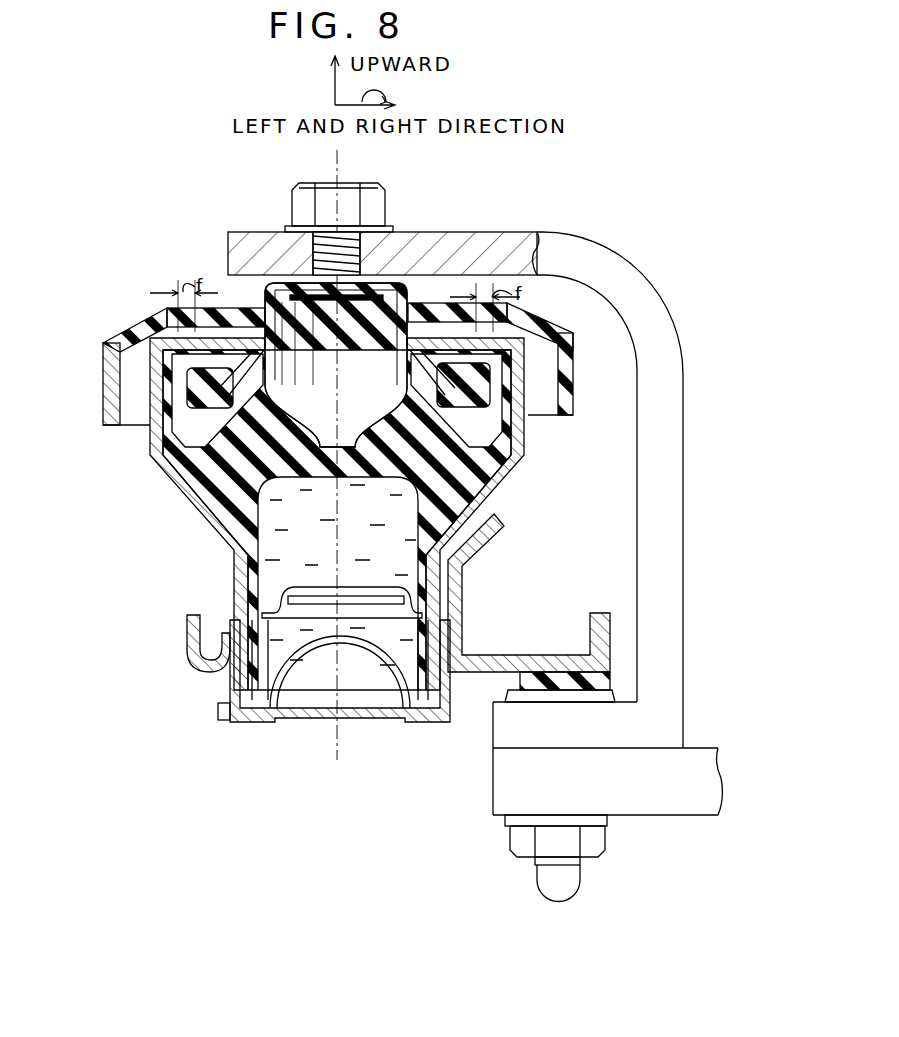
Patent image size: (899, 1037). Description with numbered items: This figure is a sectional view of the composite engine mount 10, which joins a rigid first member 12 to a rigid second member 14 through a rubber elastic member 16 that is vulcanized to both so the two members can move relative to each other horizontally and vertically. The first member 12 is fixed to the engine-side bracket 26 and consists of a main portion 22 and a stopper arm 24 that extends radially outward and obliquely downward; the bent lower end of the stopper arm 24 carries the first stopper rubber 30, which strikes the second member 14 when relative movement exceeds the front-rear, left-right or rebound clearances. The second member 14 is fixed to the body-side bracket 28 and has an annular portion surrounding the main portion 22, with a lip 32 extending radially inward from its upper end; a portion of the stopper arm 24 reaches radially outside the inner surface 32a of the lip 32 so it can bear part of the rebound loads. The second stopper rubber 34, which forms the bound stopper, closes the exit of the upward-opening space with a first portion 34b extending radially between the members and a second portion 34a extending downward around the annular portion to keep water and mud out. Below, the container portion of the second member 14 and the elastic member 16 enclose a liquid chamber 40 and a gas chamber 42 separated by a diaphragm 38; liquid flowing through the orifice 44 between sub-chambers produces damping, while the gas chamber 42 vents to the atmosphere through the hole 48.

The composite engine mount 10 is at (528, 452).
The first member 12 is at (322, 352).
The second member 14 is at (158, 452).
The elastic member 16 is at (205, 480).
The main portion 22 is at (382, 296).
The stopper arm 24 is at (236, 262).
The engine-side bracket 26 is at (476, 233).
The body-side bracket 28 is at (462, 576).
The first stopper rubber 30 is at (210, 384).
The lip 32 is at (145, 322).
The inner surface of lip 32a is at (165, 320).
The second stopper rubber 34 is at (118, 346).
The second portion 34a is at (111, 405).
The first portion 34b is at (236, 308).
The diaphragm 38 is at (283, 707).
The liquid chamber 40 is at (300, 550).
The gas chamber 42 is at (348, 692).
The orifice 44 is at (270, 612).
The hole 48 is at (378, 716).